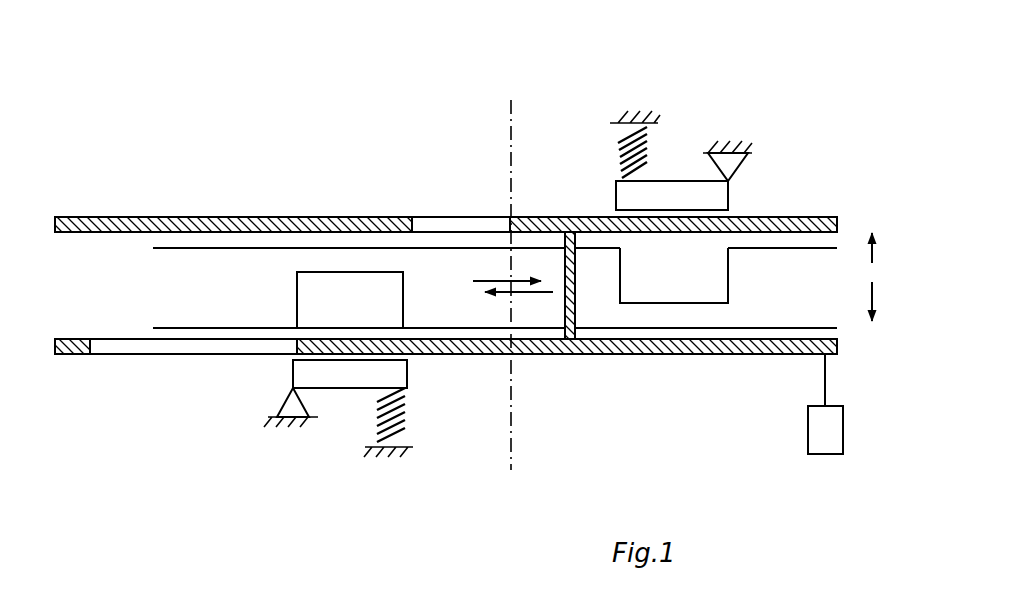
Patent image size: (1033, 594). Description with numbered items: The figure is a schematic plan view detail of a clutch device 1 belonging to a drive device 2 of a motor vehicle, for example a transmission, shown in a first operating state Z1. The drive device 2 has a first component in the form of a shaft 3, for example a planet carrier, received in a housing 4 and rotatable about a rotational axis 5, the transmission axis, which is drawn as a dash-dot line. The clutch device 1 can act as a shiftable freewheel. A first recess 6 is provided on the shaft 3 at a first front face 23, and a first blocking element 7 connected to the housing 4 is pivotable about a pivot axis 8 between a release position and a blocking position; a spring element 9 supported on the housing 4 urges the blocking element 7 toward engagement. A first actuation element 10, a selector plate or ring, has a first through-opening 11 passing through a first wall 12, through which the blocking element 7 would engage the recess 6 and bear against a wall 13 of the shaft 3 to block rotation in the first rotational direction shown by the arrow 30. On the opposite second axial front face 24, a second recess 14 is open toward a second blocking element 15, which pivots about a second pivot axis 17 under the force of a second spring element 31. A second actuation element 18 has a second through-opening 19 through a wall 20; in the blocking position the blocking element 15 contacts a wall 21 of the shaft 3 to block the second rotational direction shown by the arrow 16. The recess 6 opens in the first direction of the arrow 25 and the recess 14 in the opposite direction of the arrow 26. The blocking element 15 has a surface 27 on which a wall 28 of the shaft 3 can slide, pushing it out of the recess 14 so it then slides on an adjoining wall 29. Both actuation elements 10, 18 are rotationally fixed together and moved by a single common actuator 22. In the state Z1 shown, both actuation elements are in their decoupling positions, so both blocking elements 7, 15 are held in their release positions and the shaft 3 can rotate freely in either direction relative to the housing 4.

The first operating state Z1 is at (222, 80).
The clutch device 1 is at (64, 374).
The drive device 2 is at (794, 137).
The shaft 3 is at (207, 330).
The housing 4 is at (640, 122).
The rotational axis 5 is at (512, 125).
The first recess 6 is at (699, 266).
The first blocking element 7 is at (675, 181).
The pivot axis 8 is at (740, 181).
The spring element 9 is at (620, 175).
The first actuation element 10 is at (237, 217).
The first wall 12 is at (362, 217).
The first through-opening 11 is at (452, 216).
The wall 13 is at (625, 262).
The second recess 14 is at (394, 333).
The second blocking element 15 is at (338, 390).
The arrow 16 is at (540, 292).
The second pivot axis 17 is at (290, 390).
The second actuation element 18 is at (75, 355).
The second through-opening 19 is at (172, 362).
The wall 20 is at (352, 358).
The wall 21 is at (403, 303).
The actuator 22 is at (808, 427).
The first front face 23 is at (813, 241).
The second axial front face 24 is at (632, 361).
The arrow 25 is at (872, 259).
The arrow 26 is at (872, 305).
The surface 27 is at (362, 360).
The wall 28 is at (297, 295).
The wall 29 is at (168, 328).
The arrow 30 is at (507, 277).
The second spring element 31 is at (403, 432).